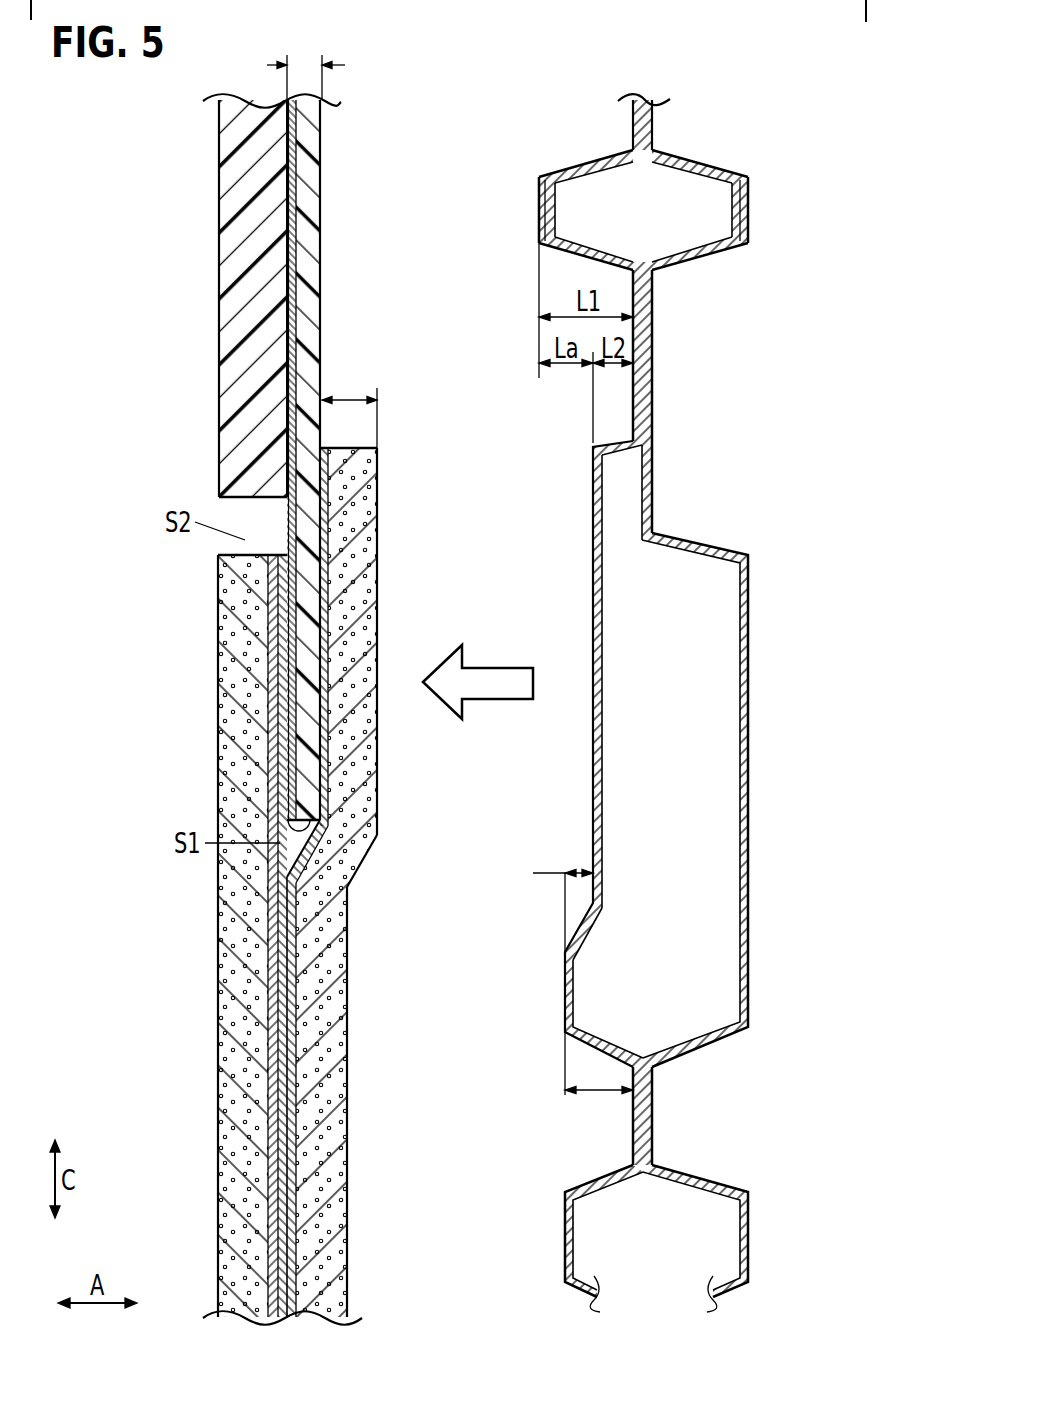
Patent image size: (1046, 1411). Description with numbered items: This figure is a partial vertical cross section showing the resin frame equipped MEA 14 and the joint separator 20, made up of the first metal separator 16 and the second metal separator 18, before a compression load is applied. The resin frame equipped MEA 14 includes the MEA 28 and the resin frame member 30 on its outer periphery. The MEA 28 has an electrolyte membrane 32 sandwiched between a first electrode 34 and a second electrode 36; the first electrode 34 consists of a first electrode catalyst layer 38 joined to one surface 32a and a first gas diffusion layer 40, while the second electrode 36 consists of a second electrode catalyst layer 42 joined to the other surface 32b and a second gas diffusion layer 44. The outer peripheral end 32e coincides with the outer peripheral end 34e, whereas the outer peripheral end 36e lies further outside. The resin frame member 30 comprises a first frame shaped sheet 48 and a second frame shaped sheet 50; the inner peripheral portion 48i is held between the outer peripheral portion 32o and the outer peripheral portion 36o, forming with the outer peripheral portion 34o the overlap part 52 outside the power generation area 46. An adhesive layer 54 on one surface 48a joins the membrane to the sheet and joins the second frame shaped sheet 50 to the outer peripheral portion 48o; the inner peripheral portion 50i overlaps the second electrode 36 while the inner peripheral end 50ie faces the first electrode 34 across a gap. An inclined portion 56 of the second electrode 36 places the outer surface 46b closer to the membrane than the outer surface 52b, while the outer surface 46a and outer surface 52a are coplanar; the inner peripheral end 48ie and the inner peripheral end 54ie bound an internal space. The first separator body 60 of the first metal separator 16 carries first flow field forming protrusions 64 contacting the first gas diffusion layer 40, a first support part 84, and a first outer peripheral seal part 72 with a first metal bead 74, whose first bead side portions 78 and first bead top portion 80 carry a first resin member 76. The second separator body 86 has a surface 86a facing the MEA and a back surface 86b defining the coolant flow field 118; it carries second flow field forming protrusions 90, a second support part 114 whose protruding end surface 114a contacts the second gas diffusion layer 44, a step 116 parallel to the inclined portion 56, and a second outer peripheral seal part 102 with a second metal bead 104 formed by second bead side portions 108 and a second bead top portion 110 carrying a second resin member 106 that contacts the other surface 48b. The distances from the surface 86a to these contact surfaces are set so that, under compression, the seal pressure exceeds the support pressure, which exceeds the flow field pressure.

The resin frame equipped MEA 14 is at (260, 68).
The resin frame member 30 is at (241, 94).
The second frame shaped sheet 50 is at (232, 348).
The inner peripheral portion of second frame shaped sheet 50i is at (235, 480).
The inner peripheral end of second frame shaped sheet 50ie is at (232, 498).
The adhesive layer 54 is at (288, 415).
The inner peripheral end of adhesive layer 54ie is at (345, 838).
The first frame shaped sheet 48 is at (312, 247).
The one surface of first frame shaped sheet 48a is at (292, 322).
The other surface of first frame shaped sheet 48b is at (310, 290).
The outer peripheral portion of first frame shaped sheet 48o is at (312, 206).
The inner peripheral portion of first frame shaped sheet 48i is at (317, 620).
The inner peripheral end of first frame shaped sheet 48ie is at (318, 830).
The second electrode 36 is at (147, 948).
The outer peripheral end of second electrode 36e is at (355, 449).
The outer peripheral portion of second electrode 36o is at (355, 580).
The overlap part 52 is at (380, 737).
The outer surface of overlap part adjacent to first electrode 52a is at (218, 790).
The outer surface of overlap part adjacent to second electrode 52b is at (378, 790).
The inclined portion 56 is at (360, 862).
The power generation area 46 is at (352, 1098).
The outer surface of power generation area adjacent to first electrode 46a is at (218, 1237).
The outer surface of power generation area adjacent to second electrode 46b is at (349, 1228).
The second gas diffusion layer 44 is at (318, 962).
The second electrode catalyst layer 42 is at (290, 1000).
The electrolyte membrane 32 is at (283, 1022).
The outer peripheral end of electrolyte membrane 32e is at (285, 553).
The outer peripheral portion of electrolyte membrane 32o is at (275, 653).
The one surface of electrolyte membrane 32a is at (280, 1173).
The other surface of electrolyte membrane 32b is at (297, 1152).
The first electrode catalyst layer 38 is at (272, 1047).
The first electrode 34 is at (147, 1040).
The outer peripheral end of first electrode 34e is at (235, 560).
The outer peripheral portion of first electrode 34o is at (240, 735).
The first gas diffusion layer 40 is at (245, 1090).
The MEA 28 is at (110, 965).
The frame 20 is at (702, 60).
The second metal separator 18 is at (602, 140).
The first metal separator 16 is at (681, 140).
The second outer peripheral seal part 102 is at (573, 157).
The first outer peripheral seal part 72 is at (717, 157).
The second metal bead 104 is at (470, 125).
The second bead side portions 108 is at (565, 170).
The second bead top portion 110 is at (540, 187).
The second resin member 106 is at (540, 225).
The first resin member 76 is at (748, 203).
The first bead side portions 78 is at (693, 170).
The first bead top portion 80 is at (731, 198).
The first metal bead 74 is at (758, 318).
The first separator body 60 is at (653, 396).
The second separator body 86 is at (633, 425).
The surface of second separator body 86a is at (632, 402).
The back surface of second separator body 86b is at (645, 420).
The second support part 114 is at (598, 773).
The protruding end surface of second support part 114a is at (598, 743).
The first support part 84 is at (749, 802).
The first flow field forming protrusions 64 is at (749, 987).
The step 116 is at (585, 921).
The second flow field forming protrusions 90 is at (574, 990).
The coolant flow field 118 is at (718, 1232).